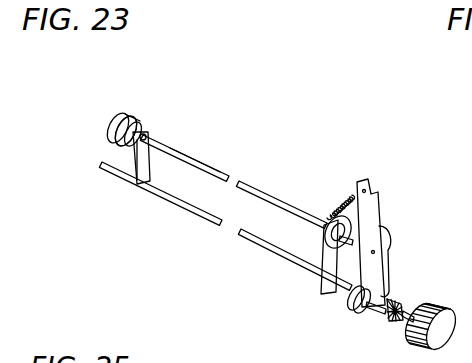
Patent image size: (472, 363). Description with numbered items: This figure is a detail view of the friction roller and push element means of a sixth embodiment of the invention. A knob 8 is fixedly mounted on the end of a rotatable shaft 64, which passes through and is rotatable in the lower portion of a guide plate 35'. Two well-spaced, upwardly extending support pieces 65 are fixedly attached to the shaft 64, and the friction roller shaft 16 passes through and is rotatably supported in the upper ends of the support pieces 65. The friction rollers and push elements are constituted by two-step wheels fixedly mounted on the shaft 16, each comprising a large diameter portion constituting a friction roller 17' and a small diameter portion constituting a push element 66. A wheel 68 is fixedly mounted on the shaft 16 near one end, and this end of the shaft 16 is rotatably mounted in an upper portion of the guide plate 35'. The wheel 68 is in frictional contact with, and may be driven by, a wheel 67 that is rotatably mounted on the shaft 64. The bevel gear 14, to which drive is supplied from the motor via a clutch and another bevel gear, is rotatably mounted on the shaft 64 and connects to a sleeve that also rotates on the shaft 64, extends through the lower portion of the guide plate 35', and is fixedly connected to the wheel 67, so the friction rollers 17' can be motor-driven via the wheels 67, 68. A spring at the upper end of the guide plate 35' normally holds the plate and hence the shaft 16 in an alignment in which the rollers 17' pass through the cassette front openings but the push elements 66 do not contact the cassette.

The friction roller 17' is at (127, 107).
The push element 66 is at (136, 115).
The support pieces 65 is at (190, 159).
The friction roller shaft 16 is at (192, 163).
The rotatable shaft 64 is at (278, 254).
The guide plate 35' is at (393, 240).
The wheel 68 is at (394, 240).
The wheel 67 is at (352, 303).
The bevel gear 14 is at (393, 297).
The knob 8 is at (435, 333).